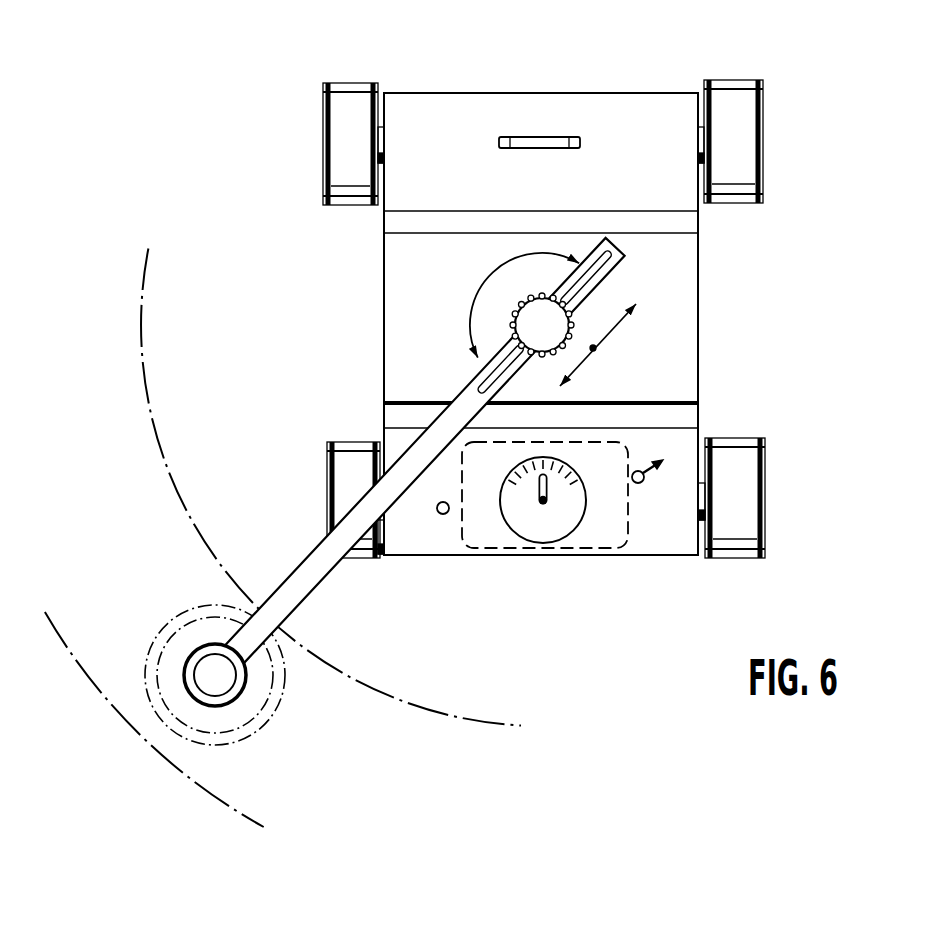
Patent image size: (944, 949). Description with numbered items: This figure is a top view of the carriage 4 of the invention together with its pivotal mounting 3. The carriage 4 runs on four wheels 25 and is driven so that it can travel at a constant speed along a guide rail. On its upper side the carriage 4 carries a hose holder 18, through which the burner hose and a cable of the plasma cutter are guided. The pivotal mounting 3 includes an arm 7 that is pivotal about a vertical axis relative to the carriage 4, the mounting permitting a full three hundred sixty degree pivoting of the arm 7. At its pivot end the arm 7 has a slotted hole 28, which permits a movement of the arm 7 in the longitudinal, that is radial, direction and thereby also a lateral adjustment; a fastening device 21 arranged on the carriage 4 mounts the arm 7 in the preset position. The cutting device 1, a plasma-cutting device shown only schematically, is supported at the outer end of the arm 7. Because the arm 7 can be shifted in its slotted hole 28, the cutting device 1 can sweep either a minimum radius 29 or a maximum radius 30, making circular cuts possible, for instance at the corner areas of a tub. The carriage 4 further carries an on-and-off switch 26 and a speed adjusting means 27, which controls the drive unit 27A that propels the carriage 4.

The cutting device 1 is at (170, 600).
The pivotal mounting 3 is at (438, 329).
The carriage 4 is at (680, 339).
The arm 7 is at (404, 438).
The hose holder 18 is at (557, 140).
The fastening device 21 is at (557, 328).
The wheels 25 is at (728, 108).
The on-and-off switch 26 is at (640, 485).
The speed adjusting means 27 is at (541, 508).
The drive unit 27A is at (474, 548).
The slotted hole 28 is at (594, 252).
The minimum radius 29 is at (521, 726).
The maximum radius 30 is at (281, 837).